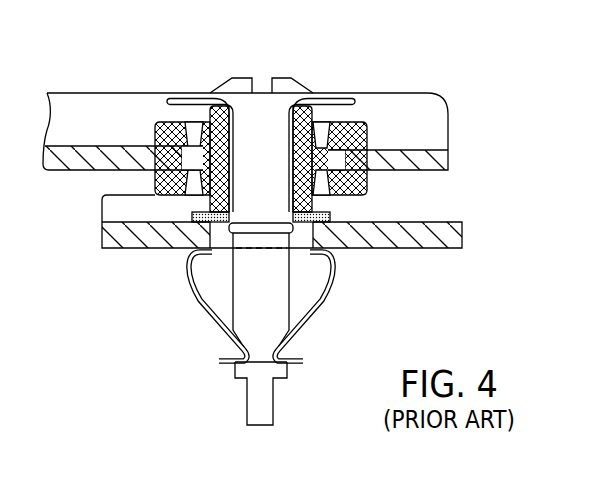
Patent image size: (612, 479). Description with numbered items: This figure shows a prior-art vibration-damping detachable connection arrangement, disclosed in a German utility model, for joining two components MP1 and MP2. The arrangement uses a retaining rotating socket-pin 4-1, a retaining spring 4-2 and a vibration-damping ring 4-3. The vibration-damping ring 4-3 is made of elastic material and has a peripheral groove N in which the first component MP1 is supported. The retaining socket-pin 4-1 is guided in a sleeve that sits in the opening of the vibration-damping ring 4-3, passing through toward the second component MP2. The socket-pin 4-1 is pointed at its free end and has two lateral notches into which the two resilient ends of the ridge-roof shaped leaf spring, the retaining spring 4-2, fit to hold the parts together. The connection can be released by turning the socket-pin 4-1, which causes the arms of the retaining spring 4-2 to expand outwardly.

The peripheral groove N is at (181, 158).
The first component MP1 is at (400, 158).
The second component MP2 is at (402, 238).
The retaining rotating socket-pin 4-1 is at (272, 118).
The retaining spring 4-2 is at (208, 310).
The vibration-damping ring 4-3 is at (246, 178).